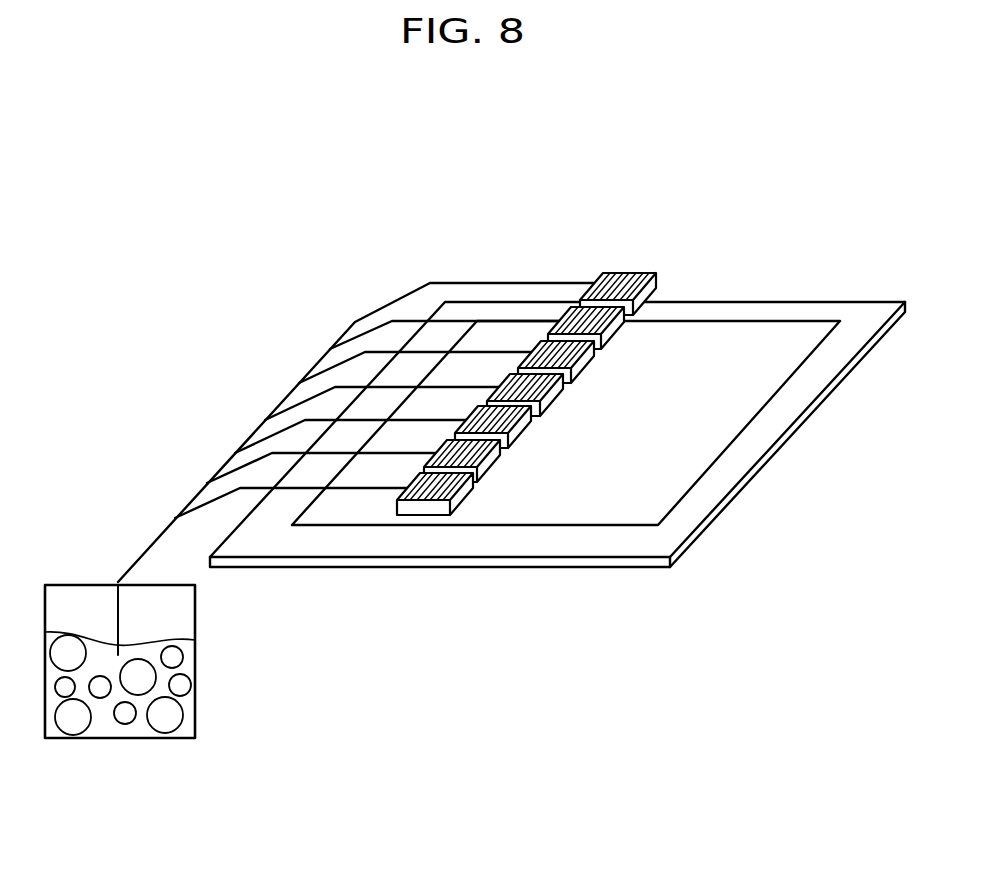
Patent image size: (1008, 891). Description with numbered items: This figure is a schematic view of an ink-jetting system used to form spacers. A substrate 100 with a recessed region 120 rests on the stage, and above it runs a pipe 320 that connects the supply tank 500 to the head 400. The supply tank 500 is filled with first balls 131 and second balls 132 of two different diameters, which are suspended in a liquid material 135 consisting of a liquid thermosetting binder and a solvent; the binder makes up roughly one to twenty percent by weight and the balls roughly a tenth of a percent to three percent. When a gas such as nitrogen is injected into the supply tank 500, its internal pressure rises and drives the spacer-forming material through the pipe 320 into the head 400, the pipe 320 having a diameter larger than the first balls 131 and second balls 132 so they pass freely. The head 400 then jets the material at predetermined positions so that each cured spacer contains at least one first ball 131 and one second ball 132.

The substrate 100 is at (762, 321).
The recess region of substrate 120 is at (790, 403).
The first balls 131 is at (170, 720).
The second balls 132 is at (182, 688).
The liquid material 135 is at (187, 667).
The pipe 320 is at (387, 303).
The head 400 is at (652, 271).
The container with particle solution 500 is at (195, 615).